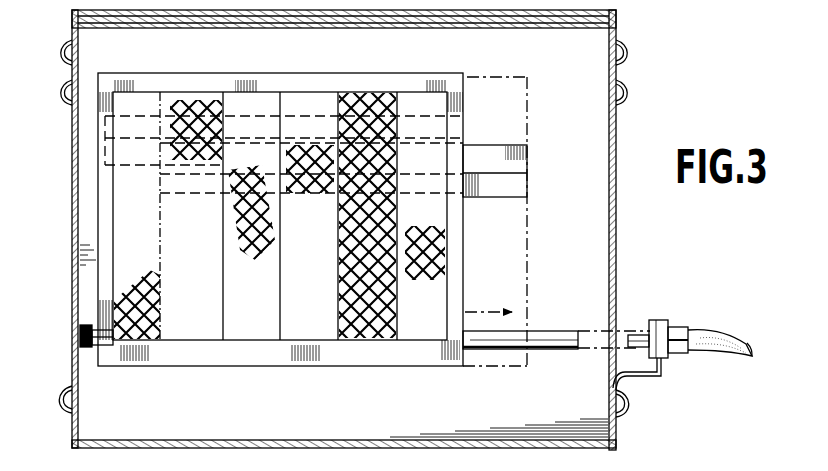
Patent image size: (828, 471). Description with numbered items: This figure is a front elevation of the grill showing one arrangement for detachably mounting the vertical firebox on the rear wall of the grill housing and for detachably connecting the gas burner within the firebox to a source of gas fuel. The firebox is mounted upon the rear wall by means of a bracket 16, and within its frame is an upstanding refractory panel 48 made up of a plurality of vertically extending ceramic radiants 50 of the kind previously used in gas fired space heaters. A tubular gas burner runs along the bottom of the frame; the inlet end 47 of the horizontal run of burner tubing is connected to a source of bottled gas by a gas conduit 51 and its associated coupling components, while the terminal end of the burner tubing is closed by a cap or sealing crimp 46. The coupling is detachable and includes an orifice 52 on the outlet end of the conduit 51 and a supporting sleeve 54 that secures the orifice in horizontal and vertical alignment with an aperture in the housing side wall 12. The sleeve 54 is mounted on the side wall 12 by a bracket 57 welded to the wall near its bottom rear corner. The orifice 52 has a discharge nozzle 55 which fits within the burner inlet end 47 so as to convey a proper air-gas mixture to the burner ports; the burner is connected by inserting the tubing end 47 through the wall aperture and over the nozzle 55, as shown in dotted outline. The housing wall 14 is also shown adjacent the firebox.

The housing side wall 12 is at (615, 241).
The container side wall 14 is at (72, 235).
The bracket 16 is at (506, 145).
The cap or sealing crimp 46 is at (86, 348).
The inlet end 47 is at (566, 350).
The refractory panel 48 is at (254, 325).
The ceramic radiants 50 is at (145, 210).
The gas conduit 51 is at (737, 340).
The orifice 52 is at (680, 358).
The supporting sleeve 54 is at (660, 322).
The discharge nozzle 55 is at (640, 334).
The bracket 57 is at (652, 378).